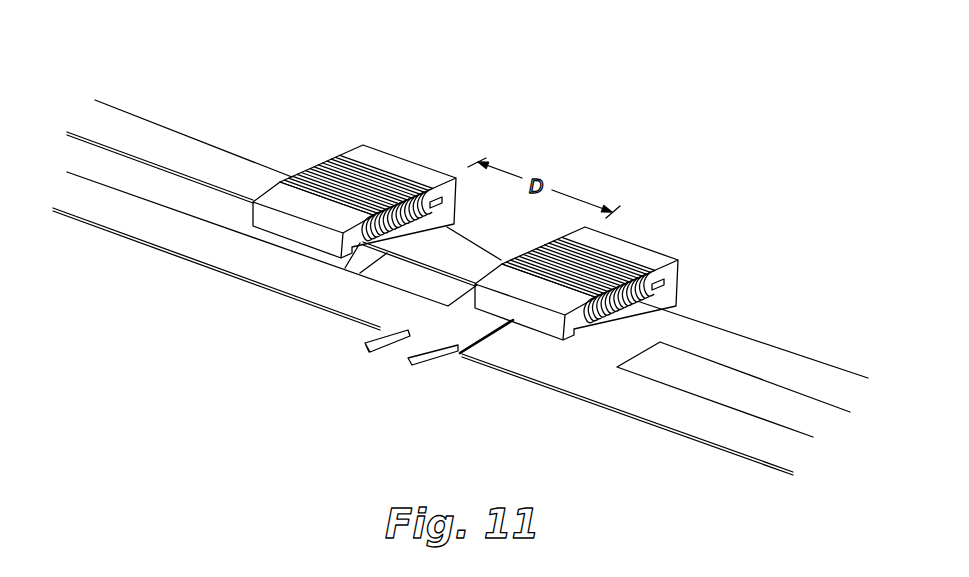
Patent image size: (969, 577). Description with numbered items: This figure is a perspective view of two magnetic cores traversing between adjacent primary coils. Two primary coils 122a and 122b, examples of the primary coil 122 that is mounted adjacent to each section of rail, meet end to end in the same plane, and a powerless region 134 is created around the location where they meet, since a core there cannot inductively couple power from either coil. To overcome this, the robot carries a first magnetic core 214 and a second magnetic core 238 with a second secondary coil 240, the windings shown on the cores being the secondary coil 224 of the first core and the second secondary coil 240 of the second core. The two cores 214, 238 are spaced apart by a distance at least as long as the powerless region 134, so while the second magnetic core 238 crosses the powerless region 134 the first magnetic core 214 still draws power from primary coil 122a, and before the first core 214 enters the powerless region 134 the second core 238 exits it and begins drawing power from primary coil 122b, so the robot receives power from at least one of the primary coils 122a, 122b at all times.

The primary coil 122 is at (460, 249).
The primary coil 122a is at (152, 98).
The primary coil 122b is at (768, 332).
The magnetic core 214 is at (371, 162).
The winding of first inductor 224 is at (304, 163).
The second magnetic core 238 is at (595, 271).
The second secondary coil 240 is at (538, 247).
The powerless region 134 is at (550, 430).